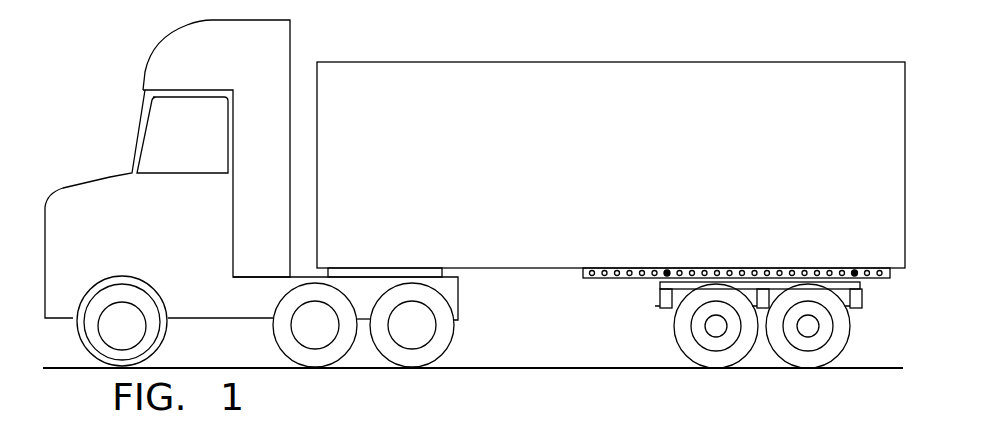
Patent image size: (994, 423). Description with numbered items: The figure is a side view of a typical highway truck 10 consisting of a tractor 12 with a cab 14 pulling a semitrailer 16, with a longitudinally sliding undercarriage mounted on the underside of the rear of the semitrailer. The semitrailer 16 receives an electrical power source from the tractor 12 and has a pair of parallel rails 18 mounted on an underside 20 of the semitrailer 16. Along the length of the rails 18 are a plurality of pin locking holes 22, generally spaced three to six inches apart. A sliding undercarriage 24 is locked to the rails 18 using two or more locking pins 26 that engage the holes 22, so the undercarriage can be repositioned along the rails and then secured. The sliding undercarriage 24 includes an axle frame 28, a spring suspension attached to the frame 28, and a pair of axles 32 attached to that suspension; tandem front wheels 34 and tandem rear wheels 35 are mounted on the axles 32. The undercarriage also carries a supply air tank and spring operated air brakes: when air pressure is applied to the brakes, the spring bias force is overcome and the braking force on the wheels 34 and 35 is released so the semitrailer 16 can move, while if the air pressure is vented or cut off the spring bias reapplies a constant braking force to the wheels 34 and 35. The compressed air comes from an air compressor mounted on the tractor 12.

The truck 10 is at (813, 57).
The tractor 12 is at (112, 177).
The cab 14 is at (172, 145).
The semitrailer 16 is at (722, 62).
The rails 18 is at (592, 284).
The underside 20 is at (505, 268).
The pin locking holes 22 is at (880, 270).
The sliding undercarriage 24 is at (624, 300).
The locking pins 26 is at (667, 273).
The axle frame 28 is at (862, 290).
The axles 32 is at (716, 327).
The tandem front wheels 34 is at (689, 338).
The tandem rear wheels 35 is at (847, 343).